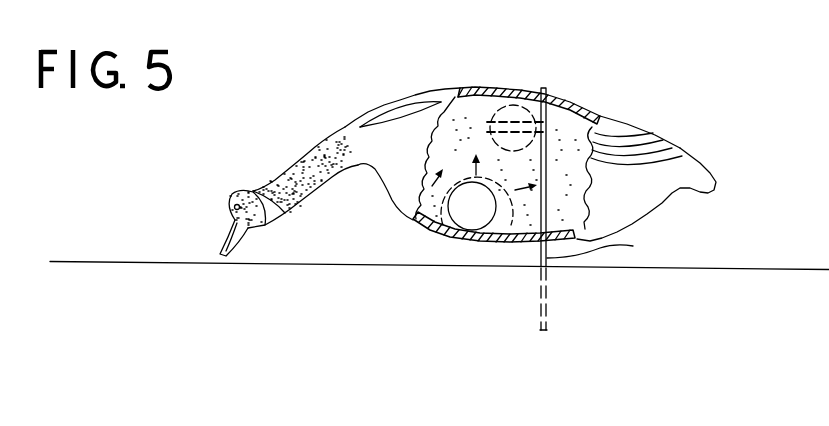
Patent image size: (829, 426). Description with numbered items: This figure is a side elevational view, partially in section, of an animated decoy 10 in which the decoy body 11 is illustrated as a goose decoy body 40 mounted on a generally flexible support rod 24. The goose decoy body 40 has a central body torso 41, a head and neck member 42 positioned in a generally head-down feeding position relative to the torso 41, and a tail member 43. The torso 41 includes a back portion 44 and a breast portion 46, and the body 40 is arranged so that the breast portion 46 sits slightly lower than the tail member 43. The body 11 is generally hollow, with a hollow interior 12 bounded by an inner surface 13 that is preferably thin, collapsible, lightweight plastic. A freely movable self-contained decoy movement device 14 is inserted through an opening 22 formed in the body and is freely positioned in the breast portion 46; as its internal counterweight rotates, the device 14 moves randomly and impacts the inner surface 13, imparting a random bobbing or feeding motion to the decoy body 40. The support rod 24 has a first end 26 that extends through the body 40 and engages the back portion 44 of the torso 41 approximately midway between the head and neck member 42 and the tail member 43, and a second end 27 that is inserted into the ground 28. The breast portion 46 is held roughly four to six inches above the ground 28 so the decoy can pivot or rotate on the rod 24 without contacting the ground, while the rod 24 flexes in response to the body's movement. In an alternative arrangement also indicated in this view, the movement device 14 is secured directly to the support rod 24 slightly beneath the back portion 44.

The animated decoy 10 is at (344, 68).
The decoy body 11 is at (656, 145).
The hollow interior 12 is at (574, 126).
The inner surface 13 is at (473, 110).
The decoy movement device 14 is at (517, 103).
The opening 22 is at (393, 112).
The support rod 24 is at (606, 249).
The first end 26 is at (548, 93).
The second end 27 is at (548, 318).
The ground 28 is at (752, 268).
The goose decoy body 40 is at (333, 115).
The central body torso 41 is at (407, 178).
The head and neck member 42 is at (292, 190).
The tail member 43 is at (698, 176).
The back portion 44 is at (500, 98).
The breast portion 46 is at (467, 212).